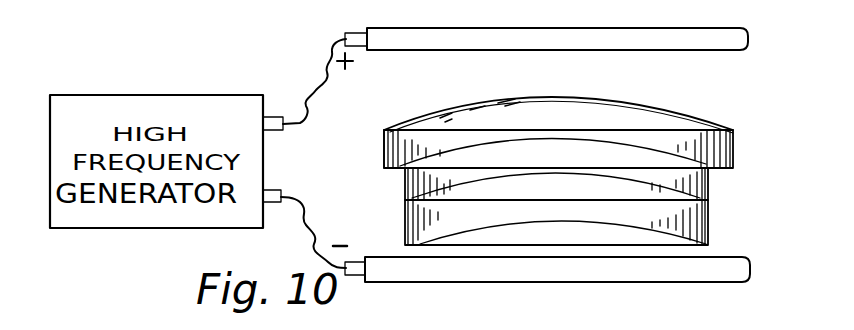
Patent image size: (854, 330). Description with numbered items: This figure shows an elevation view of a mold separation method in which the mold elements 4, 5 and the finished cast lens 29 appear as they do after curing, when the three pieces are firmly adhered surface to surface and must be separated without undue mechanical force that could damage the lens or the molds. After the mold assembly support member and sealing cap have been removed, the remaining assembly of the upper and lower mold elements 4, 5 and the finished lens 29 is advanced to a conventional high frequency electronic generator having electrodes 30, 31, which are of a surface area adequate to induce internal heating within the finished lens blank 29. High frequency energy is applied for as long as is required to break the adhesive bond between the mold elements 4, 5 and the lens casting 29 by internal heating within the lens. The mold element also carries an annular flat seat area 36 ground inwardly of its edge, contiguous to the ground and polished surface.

The electrode 30 is at (757, 38).
The electrode 31 is at (754, 266).
The mold element 5 is at (735, 147).
The finished cast lens 29 is at (710, 190).
The mold element 4 is at (710, 222).
The annular flat seat area 36 is at (391, 171).